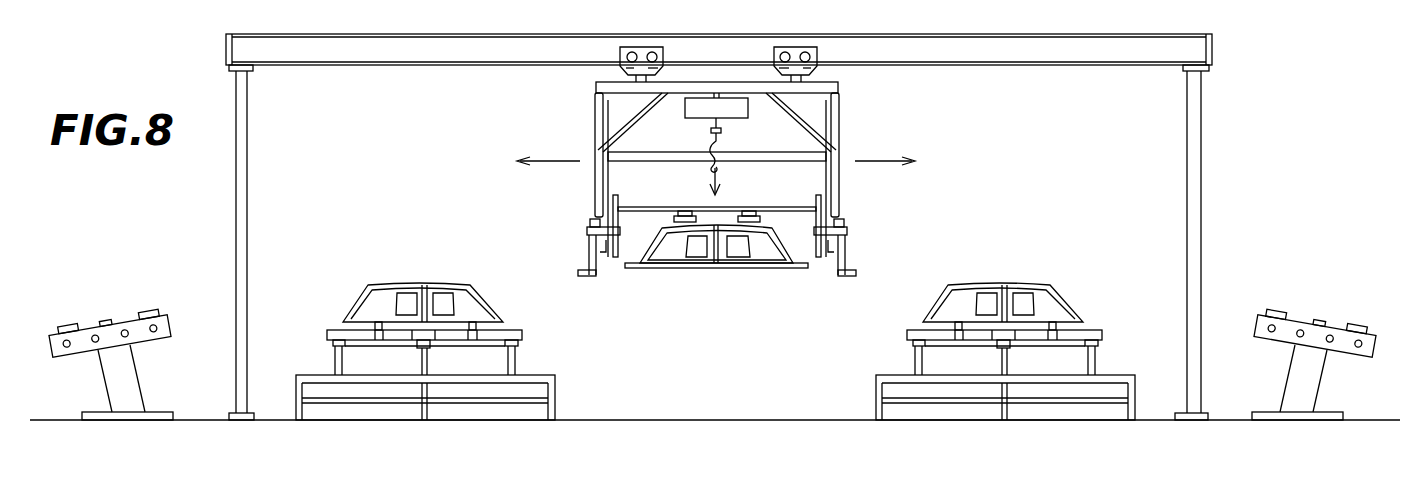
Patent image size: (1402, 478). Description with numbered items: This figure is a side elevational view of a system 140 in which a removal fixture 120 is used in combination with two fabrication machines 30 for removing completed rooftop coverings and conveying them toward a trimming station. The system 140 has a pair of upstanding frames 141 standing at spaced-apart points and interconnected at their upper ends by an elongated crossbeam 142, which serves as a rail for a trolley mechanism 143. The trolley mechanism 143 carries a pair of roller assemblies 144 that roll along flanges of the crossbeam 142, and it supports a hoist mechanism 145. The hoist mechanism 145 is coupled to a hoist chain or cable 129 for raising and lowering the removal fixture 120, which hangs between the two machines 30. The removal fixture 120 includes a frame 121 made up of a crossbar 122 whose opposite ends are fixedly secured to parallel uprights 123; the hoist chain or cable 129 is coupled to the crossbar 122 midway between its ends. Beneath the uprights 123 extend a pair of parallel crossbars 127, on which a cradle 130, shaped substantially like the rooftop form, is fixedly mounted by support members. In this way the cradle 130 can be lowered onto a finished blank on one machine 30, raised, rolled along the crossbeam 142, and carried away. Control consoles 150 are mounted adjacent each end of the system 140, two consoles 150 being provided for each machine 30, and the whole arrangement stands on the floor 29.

The floor 29 is at (785, 420).
The fabrication machine 30 is at (404, 268).
The removal fixture 120 is at (701, 182).
The frame 121 is at (759, 164).
The crossbar 122 is at (777, 158).
The uprights 123 is at (607, 178).
The crossbars 127 is at (698, 207).
The hoist chain or cable 129 is at (722, 140).
The cradle 130 is at (689, 270).
The system 140 is at (718, 426).
The upstanding frames 141 is at (243, 218).
The crossbeam 142 is at (1035, 47).
The trolley mechanism 143 is at (740, 81).
The roller assemblies 144 is at (772, 50).
The hoist mechanism 145 is at (700, 114).
The control consoles 150 is at (90, 305).